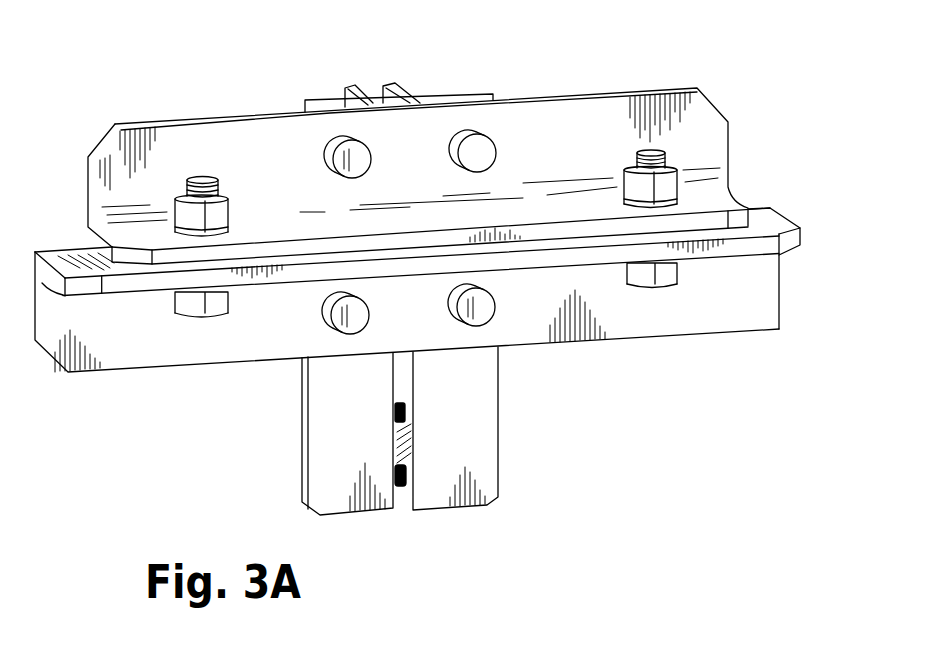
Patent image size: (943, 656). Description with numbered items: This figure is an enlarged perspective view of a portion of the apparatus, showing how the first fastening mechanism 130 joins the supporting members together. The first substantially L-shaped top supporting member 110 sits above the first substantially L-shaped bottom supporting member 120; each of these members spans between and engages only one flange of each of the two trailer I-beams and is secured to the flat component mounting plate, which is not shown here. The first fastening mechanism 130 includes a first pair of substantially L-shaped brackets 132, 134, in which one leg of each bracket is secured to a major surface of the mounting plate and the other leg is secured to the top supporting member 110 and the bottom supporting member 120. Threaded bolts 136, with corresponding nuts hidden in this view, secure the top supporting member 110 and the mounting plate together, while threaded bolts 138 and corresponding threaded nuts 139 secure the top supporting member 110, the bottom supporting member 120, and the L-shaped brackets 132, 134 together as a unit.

The first substantially L-shaped top supporting member 110 is at (664, 110).
The first substantially L-shaped bottom supporting member 120 is at (708, 337).
The first fastening mechanism 130 is at (402, 490).
The L-shaped bracket 132 is at (302, 477).
The L-shaped bracket 134 is at (498, 457).
The threaded bolt 136 is at (405, 413).
The threaded bolt 138 is at (362, 158).
The threaded nut 139 is at (222, 205).